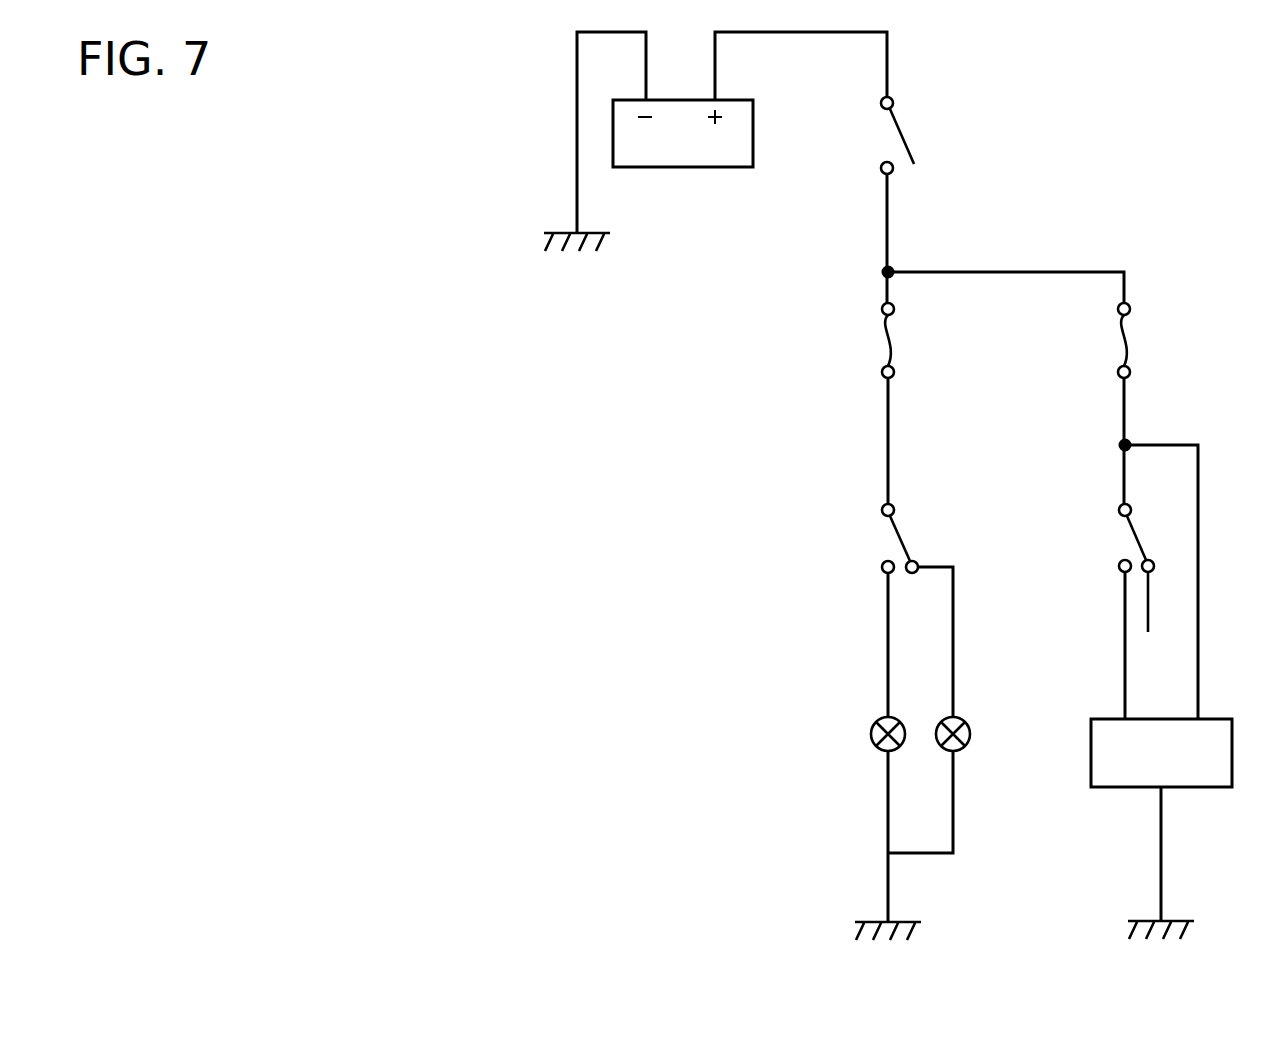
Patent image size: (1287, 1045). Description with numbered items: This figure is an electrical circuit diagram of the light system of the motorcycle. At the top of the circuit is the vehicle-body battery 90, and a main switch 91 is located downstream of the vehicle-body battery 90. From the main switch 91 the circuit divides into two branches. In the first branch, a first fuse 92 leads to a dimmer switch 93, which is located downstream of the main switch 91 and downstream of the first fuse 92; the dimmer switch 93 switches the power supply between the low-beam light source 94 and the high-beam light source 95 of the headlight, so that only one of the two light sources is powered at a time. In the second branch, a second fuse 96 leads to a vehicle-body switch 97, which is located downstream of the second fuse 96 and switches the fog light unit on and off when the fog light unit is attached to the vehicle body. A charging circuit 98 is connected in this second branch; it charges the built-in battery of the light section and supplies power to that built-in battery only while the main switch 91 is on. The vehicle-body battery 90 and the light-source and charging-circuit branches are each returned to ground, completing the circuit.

The vehicle-body battery 90 is at (683, 168).
The main switch 91 is at (931, 101).
The first fuse 92 is at (857, 346).
The dimmer switch 93 is at (915, 521).
The low-beam light source 94 is at (853, 757).
The high-beam light source 95 is at (977, 757).
The second fuse 96 is at (1154, 331).
The vehicle-body switch 97 is at (1107, 536).
The charging circuit 98 is at (1200, 788).